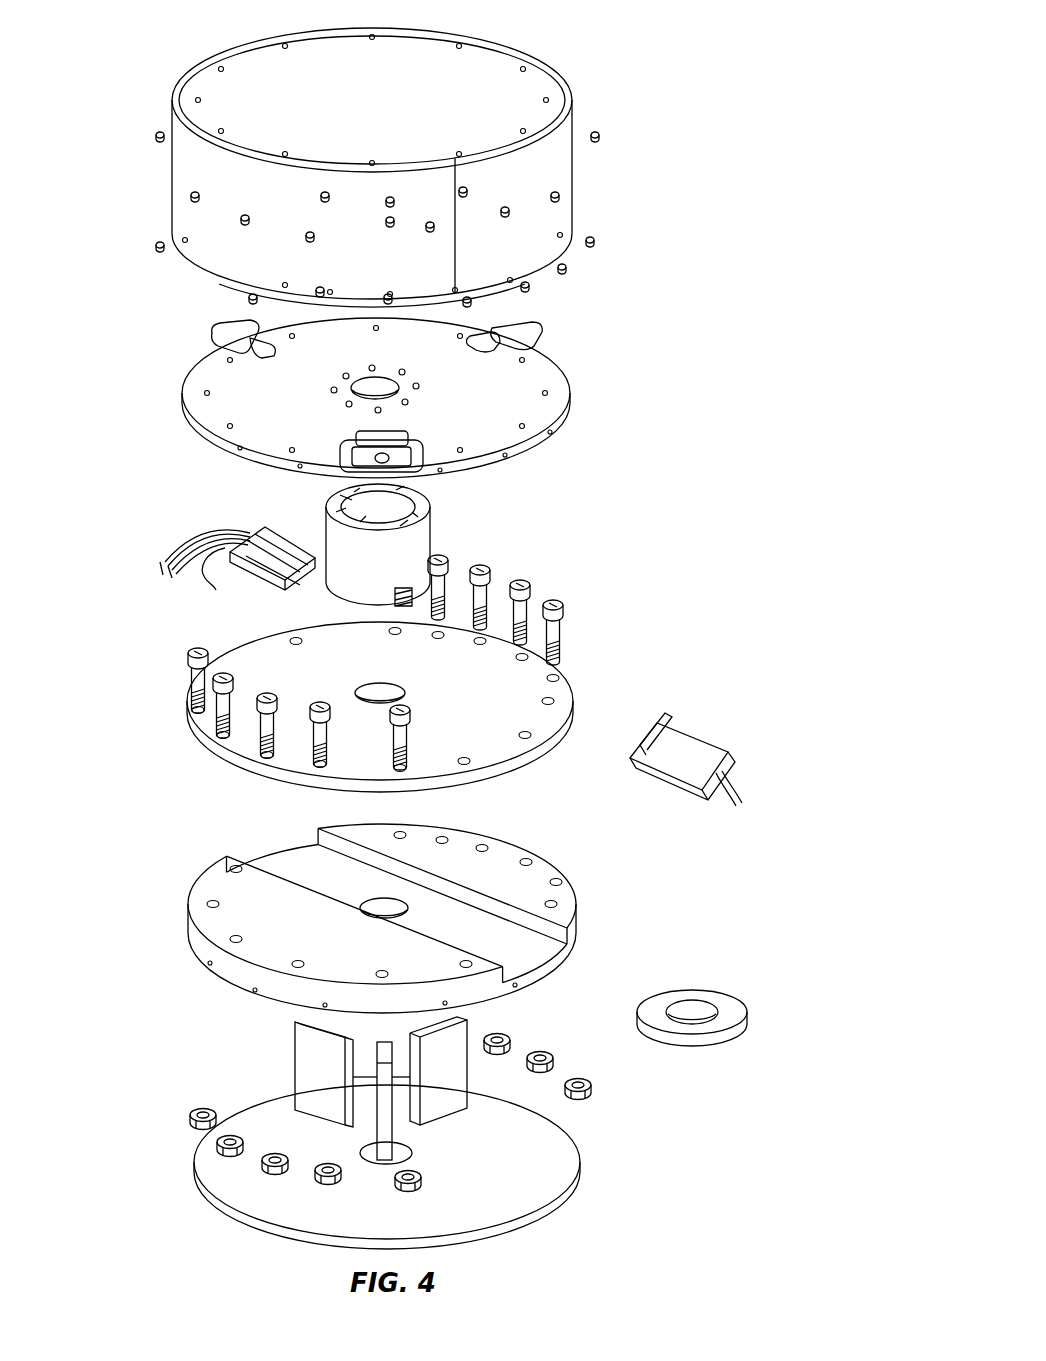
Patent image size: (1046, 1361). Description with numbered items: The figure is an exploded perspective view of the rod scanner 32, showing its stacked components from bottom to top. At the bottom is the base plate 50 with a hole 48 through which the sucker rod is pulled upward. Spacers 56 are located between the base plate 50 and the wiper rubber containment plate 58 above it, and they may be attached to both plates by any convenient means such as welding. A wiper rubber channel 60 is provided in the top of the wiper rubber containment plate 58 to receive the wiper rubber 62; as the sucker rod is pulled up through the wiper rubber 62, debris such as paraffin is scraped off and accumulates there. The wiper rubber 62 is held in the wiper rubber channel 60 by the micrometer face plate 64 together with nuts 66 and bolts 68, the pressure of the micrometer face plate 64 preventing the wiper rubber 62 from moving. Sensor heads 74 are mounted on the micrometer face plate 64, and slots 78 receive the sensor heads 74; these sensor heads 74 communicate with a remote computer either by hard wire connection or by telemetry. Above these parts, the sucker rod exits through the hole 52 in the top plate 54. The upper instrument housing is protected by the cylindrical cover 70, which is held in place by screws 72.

The rod scanner 32 is at (643, 68).
The cylindrical cover 70 is at (578, 192).
The screws 72 is at (566, 274).
The top plate 54 is at (556, 350).
The hole 52 is at (405, 392).
The slots 78 is at (425, 582).
The sensor heads 74 is at (272, 574).
The bolts 68 is at (556, 602).
The micrometer face plate 64 is at (527, 763).
The wiper rubber containment plate 58 is at (578, 890).
The wiper rubber channel 60 is at (478, 939).
The wiper rubber 62 is at (707, 993).
The spacers 56 is at (296, 1065).
The hole 48 is at (375, 1162).
The nuts 66 is at (580, 1076).
The base plate 50 is at (560, 1200).